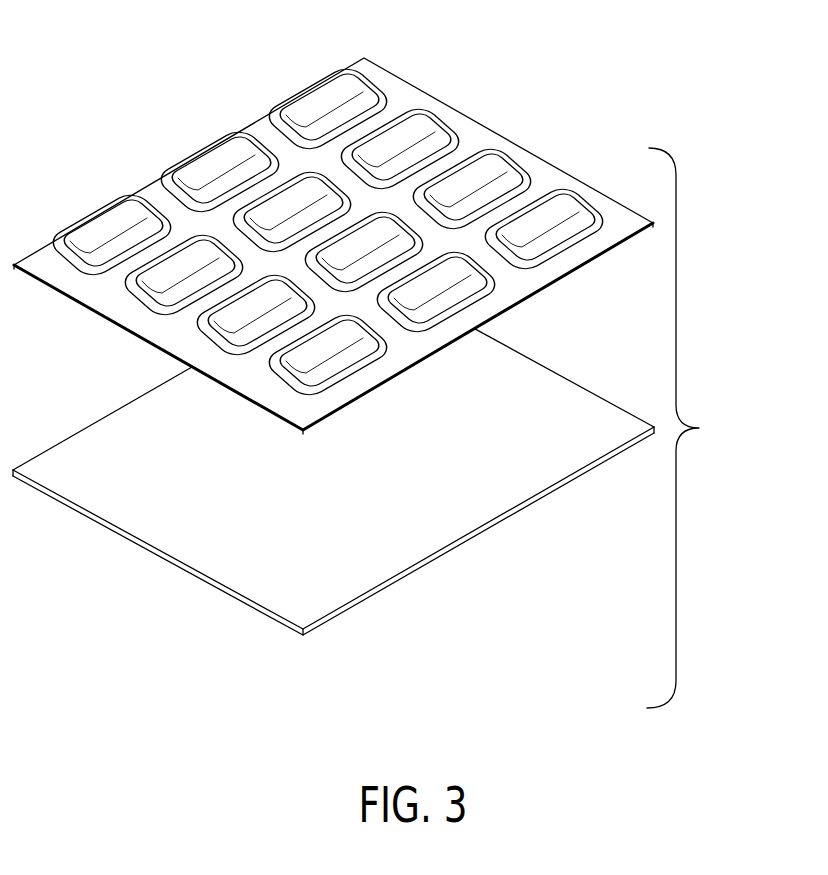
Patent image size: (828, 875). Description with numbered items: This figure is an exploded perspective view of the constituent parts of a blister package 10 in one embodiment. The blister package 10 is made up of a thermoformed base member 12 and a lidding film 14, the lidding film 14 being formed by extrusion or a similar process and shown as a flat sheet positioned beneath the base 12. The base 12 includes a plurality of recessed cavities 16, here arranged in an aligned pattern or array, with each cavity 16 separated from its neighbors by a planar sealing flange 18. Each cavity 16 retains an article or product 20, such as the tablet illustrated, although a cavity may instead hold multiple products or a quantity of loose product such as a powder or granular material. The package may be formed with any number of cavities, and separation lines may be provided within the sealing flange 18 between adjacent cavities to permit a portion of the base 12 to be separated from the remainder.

The blister package 10 is at (699, 428).
The thermoformed base member 12 is at (493, 132).
The lidding film 14 is at (503, 499).
The recessed cavity 16 is at (200, 163).
The planar sealing flange 18 is at (393, 95).
The article or product 20 is at (105, 228).